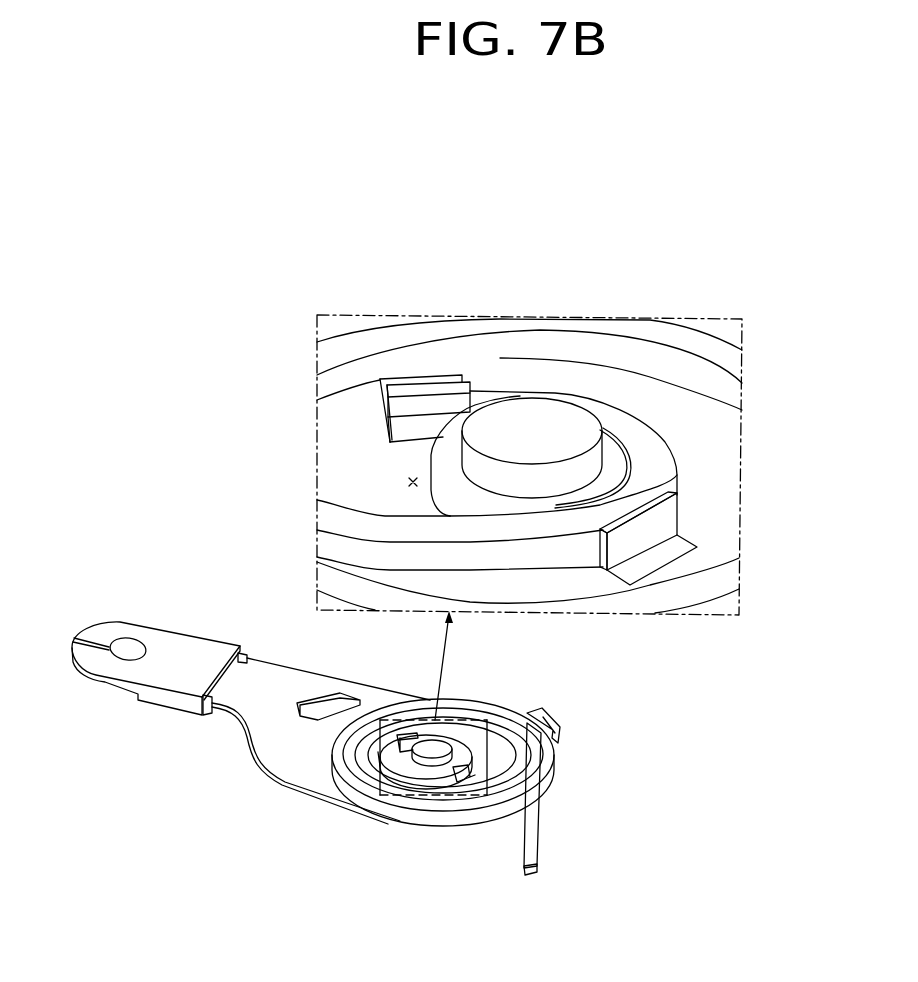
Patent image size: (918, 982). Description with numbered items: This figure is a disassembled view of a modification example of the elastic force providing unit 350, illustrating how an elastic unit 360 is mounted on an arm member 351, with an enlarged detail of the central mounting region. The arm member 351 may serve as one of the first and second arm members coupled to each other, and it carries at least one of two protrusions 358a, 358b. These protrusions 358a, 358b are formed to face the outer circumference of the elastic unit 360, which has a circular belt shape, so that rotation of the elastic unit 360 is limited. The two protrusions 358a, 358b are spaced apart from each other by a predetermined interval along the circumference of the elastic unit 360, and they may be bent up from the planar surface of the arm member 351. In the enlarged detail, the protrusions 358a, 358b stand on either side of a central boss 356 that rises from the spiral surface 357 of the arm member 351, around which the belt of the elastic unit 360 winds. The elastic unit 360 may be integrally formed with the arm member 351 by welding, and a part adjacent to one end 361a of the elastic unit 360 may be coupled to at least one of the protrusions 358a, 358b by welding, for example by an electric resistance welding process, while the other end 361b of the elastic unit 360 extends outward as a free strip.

The transfer assembly 350 is at (137, 537).
The arm member 351 is at (259, 675).
The central boss 356 is at (551, 418).
The spiral surface 357 is at (409, 483).
The protrusion 358a is at (426, 385).
The protrusion 358b is at (655, 525).
The elastic unit 360 is at (555, 826).
The one end of the elastic unit 361a is at (388, 417).
The outer end of spring strip 361b is at (530, 878).